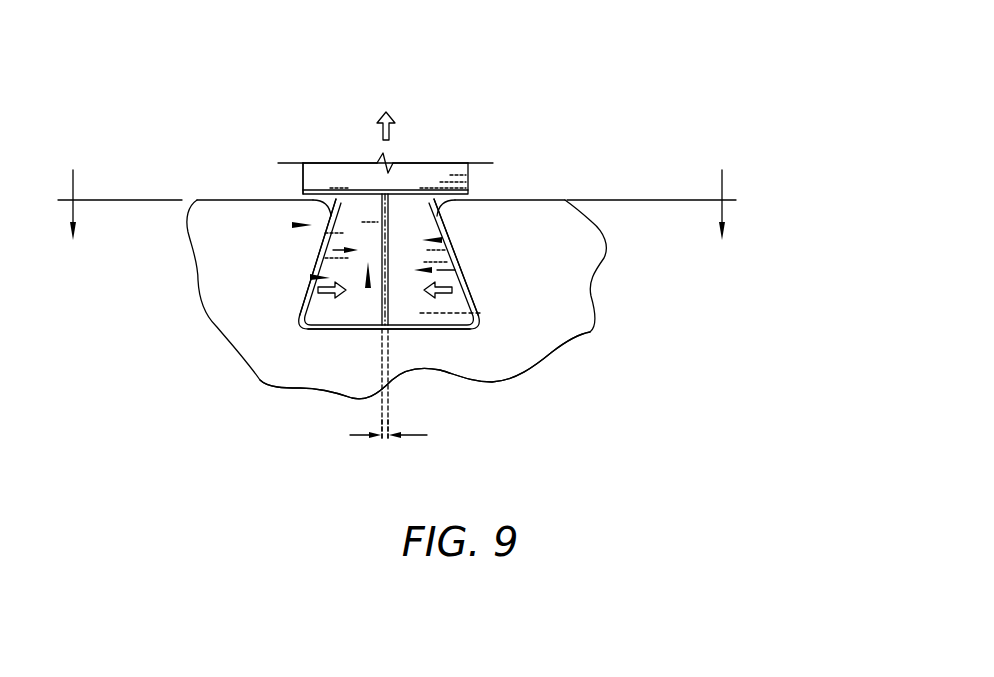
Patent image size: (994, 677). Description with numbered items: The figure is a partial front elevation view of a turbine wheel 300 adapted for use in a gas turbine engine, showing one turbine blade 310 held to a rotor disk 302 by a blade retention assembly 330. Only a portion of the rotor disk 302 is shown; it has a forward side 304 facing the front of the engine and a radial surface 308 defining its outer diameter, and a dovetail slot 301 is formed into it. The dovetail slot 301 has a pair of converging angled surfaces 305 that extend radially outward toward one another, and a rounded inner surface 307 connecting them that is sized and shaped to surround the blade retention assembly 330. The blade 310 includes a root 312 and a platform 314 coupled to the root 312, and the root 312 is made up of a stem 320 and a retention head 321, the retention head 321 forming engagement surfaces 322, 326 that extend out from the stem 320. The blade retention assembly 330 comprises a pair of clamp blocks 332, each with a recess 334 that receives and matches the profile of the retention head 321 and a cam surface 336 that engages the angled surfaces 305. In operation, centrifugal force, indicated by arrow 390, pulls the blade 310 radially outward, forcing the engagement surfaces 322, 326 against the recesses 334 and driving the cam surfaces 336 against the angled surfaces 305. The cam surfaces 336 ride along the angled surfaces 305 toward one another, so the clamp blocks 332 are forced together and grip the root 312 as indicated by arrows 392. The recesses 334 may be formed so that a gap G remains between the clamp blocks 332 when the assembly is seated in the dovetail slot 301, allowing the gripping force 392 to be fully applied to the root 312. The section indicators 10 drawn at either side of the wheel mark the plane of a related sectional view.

The turbine wheel 300 is at (712, 86).
The dovetail slot 301 is at (458, 364).
The rotor disk 302 is at (644, 300).
The forward side 304 is at (571, 337).
The converging angled surfaces 305 is at (262, 206).
The rounded inner surface 307 is at (423, 332).
The radial surface 308 is at (548, 198).
The turbine blade 310 is at (420, 118).
The root 312 is at (243, 205).
The platform 314 is at (462, 146).
The stem 320 is at (365, 195).
The retention head 321 is at (368, 290).
The engagement surface 322 is at (362, 205).
The engagement surface 326 is at (480, 313).
The blade retention assembly 330 is at (330, 242).
The clamp block 332 is at (317, 270).
The recess 334 is at (295, 226).
The cam surface 336 is at (312, 276).
The centrifugal force arrow 390 is at (375, 128).
The gripping force arrows 392 is at (330, 293).
The section line 10 is at (397, 220).
The gap G is at (384, 437).